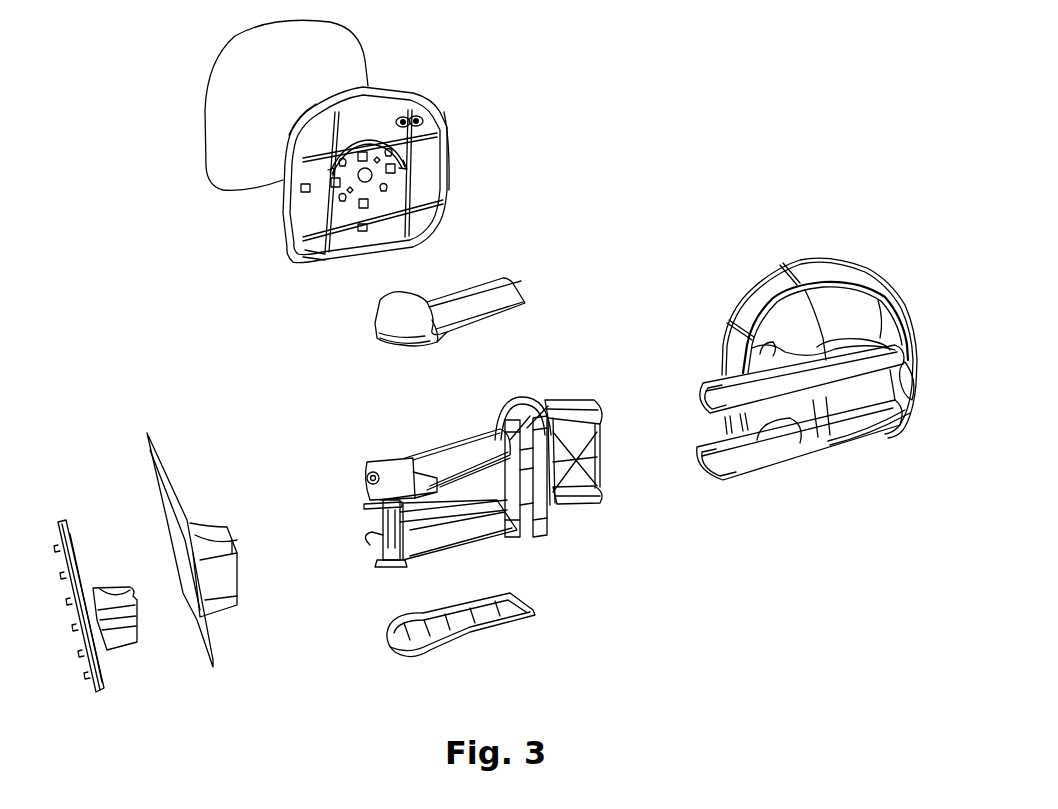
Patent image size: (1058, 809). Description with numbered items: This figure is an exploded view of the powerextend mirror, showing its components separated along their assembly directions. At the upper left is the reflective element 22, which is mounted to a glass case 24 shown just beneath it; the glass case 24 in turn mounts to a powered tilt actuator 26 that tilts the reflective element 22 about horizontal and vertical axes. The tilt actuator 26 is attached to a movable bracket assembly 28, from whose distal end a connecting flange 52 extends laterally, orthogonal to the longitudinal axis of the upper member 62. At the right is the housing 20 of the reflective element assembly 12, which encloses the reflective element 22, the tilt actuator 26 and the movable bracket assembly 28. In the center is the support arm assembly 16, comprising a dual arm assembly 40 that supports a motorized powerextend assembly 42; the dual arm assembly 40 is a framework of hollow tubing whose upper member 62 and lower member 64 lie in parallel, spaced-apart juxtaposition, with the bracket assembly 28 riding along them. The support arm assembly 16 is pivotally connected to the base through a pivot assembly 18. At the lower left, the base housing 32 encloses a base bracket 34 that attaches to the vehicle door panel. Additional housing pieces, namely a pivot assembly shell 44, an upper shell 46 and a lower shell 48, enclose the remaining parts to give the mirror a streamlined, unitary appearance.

The reflective element assembly 12 is at (803, 243).
The support arm assembly 16 is at (578, 533).
The pivot assembly 18 is at (353, 528).
The housing 20 is at (850, 275).
The reflective element 22 is at (350, 53).
The glass case 24 is at (433, 150).
The powered tilt actuator 26 is at (490, 437).
The movable bracket assembly 28 is at (564, 395).
The base housing 32 is at (172, 490).
The base bracket 34 is at (83, 560).
The dual arm assembly 40 is at (386, 568).
The motorized powerextend assembly 42 is at (385, 449).
The pivot assembly shell 44 is at (430, 517).
The upper shell 46 is at (388, 313).
The lower shell 48 is at (407, 657).
The connecting flange 52 is at (600, 422).
The upper member 62 is at (447, 460).
The lower member 64 is at (590, 497).